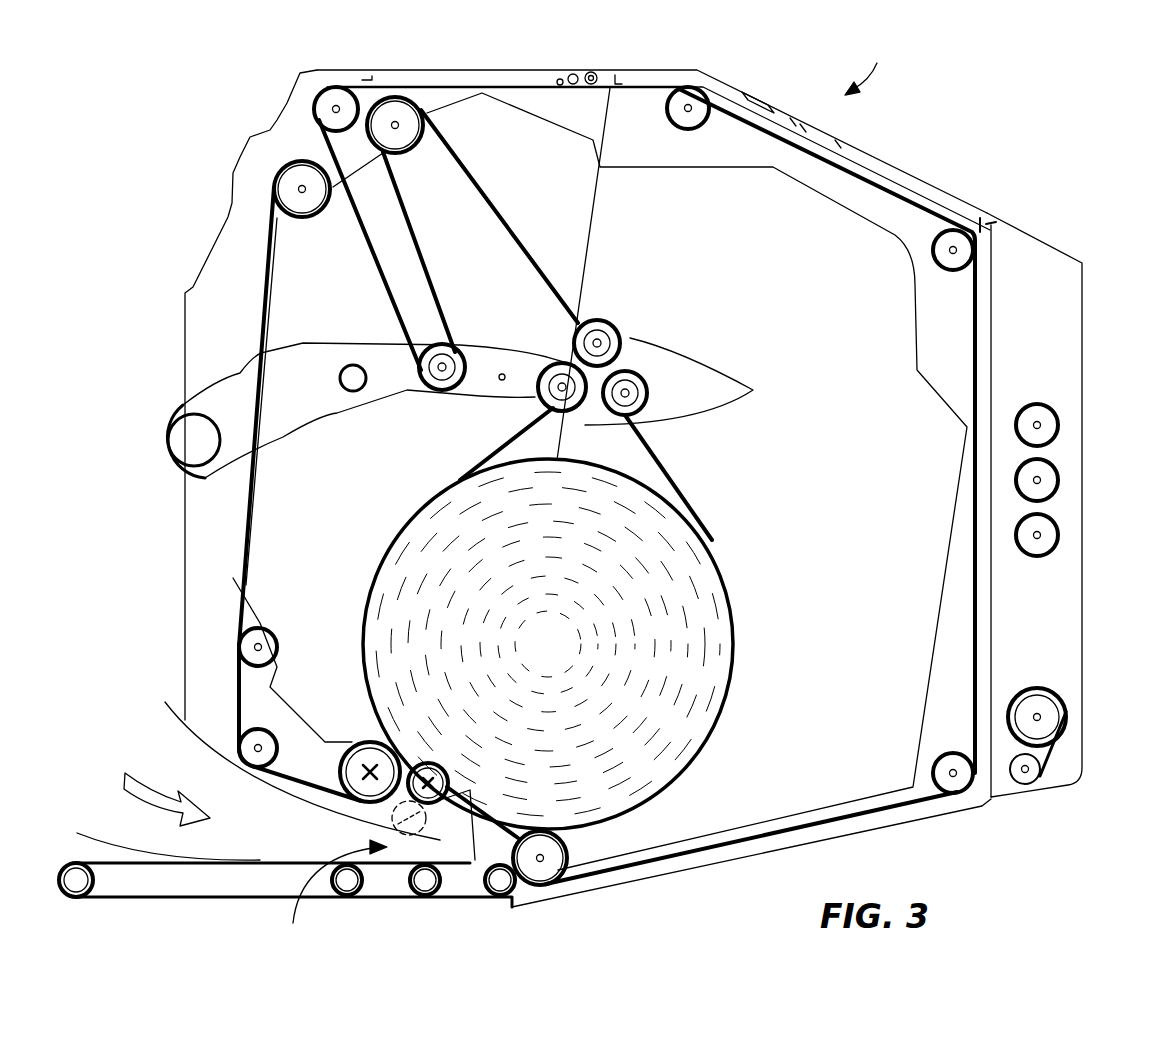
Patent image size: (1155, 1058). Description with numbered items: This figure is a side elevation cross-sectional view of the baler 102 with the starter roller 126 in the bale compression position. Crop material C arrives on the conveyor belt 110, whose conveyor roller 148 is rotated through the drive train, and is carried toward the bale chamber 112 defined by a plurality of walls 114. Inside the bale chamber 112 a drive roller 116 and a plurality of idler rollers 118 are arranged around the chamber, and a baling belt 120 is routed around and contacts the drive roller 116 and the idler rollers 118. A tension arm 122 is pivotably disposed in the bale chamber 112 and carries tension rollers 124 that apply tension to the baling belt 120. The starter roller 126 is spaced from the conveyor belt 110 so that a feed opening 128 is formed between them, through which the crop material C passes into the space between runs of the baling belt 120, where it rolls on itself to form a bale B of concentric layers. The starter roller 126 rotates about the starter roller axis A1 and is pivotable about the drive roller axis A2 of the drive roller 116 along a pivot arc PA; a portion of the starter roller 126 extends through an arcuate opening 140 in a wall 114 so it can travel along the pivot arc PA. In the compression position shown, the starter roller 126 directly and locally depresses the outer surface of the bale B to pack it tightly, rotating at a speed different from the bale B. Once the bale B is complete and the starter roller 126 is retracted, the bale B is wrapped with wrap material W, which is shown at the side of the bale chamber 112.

The baler 102 is at (883, 67).
The conveyor belt 110 is at (163, 863).
The bale chamber 112 is at (878, 324).
The wall 114 is at (655, 70).
The drive roller 116 is at (301, 188).
The idler rollers 118 is at (335, 108).
The baling belt 120 is at (523, 223).
The tension arm 122 is at (307, 370).
The tension roller 124 is at (442, 367).
The starter roller 126 is at (445, 805).
The feed opening 128 is at (326, 895).
The opening 140 is at (433, 837).
The conveyor roller 148 is at (347, 883).
The bale B is at (683, 577).
The crop material C is at (703, 640).
The wrap material W is at (1047, 777).
The starter roller axis A1 is at (470, 790).
The drive roller axis A2 is at (370, 768).
The pivot arc PA is at (425, 735).